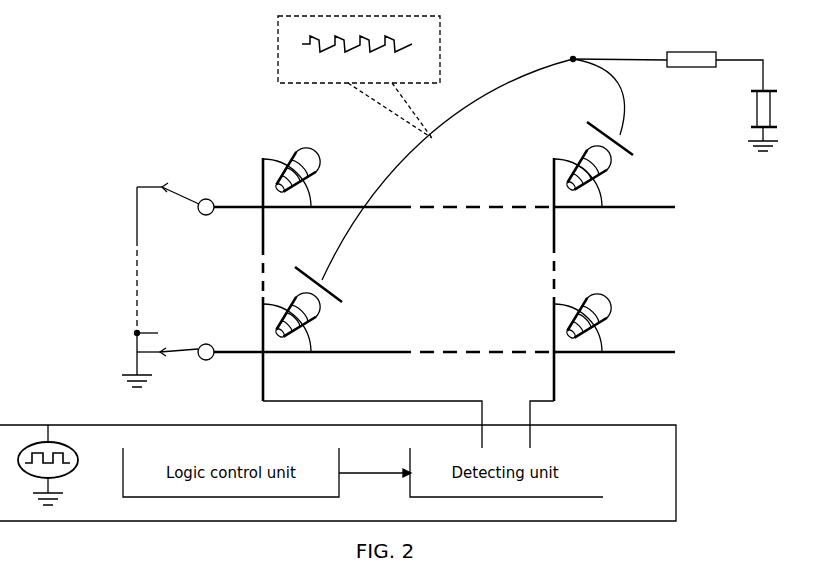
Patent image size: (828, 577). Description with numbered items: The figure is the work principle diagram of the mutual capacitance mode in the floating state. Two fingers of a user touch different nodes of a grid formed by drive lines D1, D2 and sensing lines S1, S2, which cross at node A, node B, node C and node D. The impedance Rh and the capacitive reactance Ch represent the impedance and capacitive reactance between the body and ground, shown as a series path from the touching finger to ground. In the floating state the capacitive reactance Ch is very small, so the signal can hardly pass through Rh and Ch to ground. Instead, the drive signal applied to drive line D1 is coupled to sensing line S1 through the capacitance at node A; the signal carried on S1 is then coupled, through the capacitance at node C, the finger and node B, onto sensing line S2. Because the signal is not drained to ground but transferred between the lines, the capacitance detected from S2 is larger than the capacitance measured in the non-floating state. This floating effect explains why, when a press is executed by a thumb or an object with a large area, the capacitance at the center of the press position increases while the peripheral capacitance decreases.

The node A is at (313, 171).
The node B is at (604, 169).
The node C is at (313, 316).
The node D is at (605, 317).
The drive line D1 is at (444, 220).
The drive line D2 is at (444, 365).
The sensing line S1 is at (302, 273).
The sensing line S2 is at (593, 209).
The impedance Rh is at (691, 46).
The capacitive reactance Ch is at (753, 109).